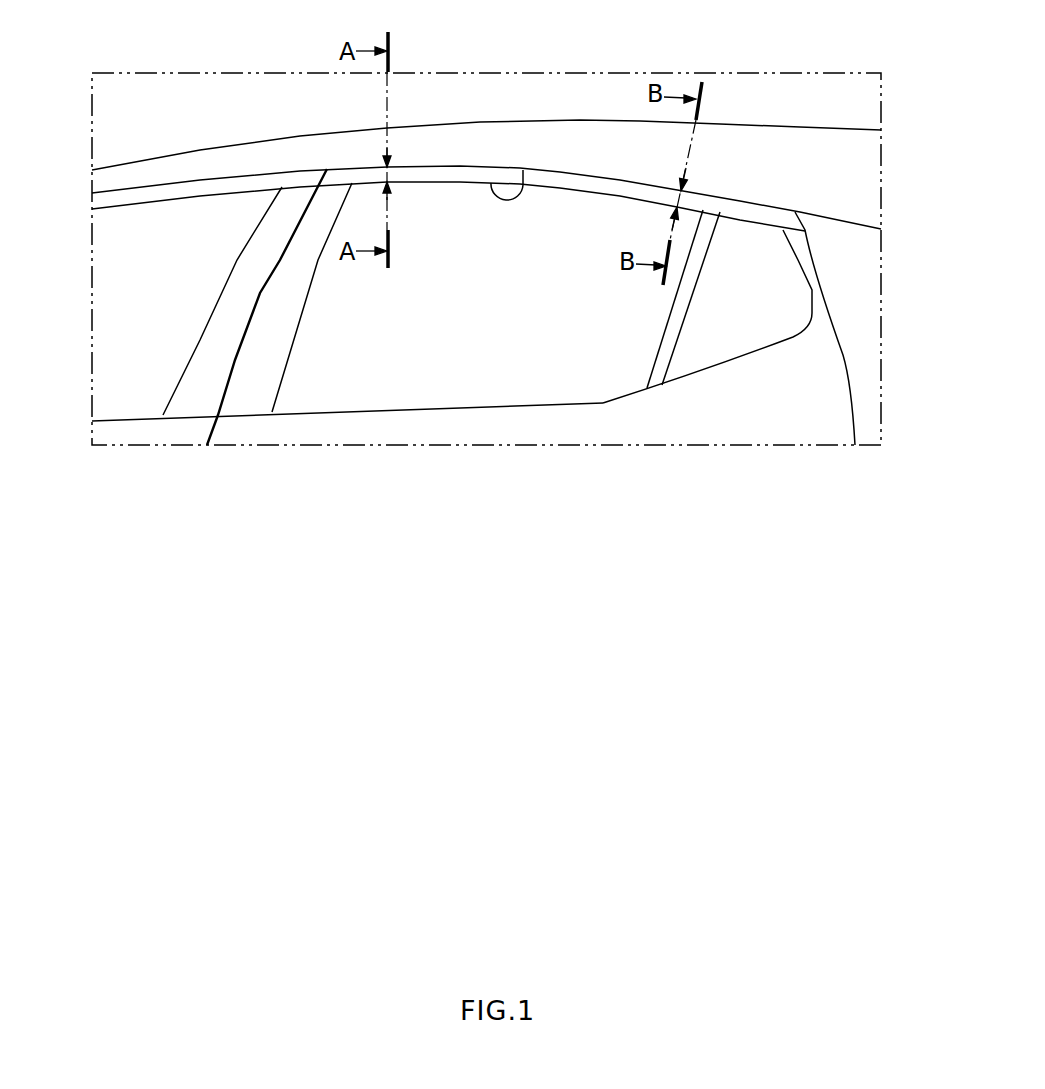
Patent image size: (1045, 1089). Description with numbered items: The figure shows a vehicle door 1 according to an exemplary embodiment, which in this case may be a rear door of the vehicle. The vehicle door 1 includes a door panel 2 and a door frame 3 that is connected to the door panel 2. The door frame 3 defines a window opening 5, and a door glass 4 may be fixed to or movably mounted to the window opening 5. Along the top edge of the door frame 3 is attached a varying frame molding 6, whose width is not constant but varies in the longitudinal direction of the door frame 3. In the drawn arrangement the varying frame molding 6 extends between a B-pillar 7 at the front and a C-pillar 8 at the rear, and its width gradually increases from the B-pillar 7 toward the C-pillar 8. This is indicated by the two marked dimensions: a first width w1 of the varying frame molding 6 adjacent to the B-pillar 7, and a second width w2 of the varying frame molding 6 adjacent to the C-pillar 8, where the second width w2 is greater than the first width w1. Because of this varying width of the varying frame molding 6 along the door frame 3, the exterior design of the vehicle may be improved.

The vehicle door 1 is at (602, 172).
The door panel 2 is at (568, 433).
The door frame 3 is at (325, 210).
The door glass 4 is at (427, 383).
The window opening 5 is at (523, 170).
The varying frame molding 6 is at (577, 187).
The B-pillar 7 is at (243, 240).
The C-pillar 8 is at (797, 192).
The first width w1 is at (388, 172).
The second width w2 is at (676, 196).